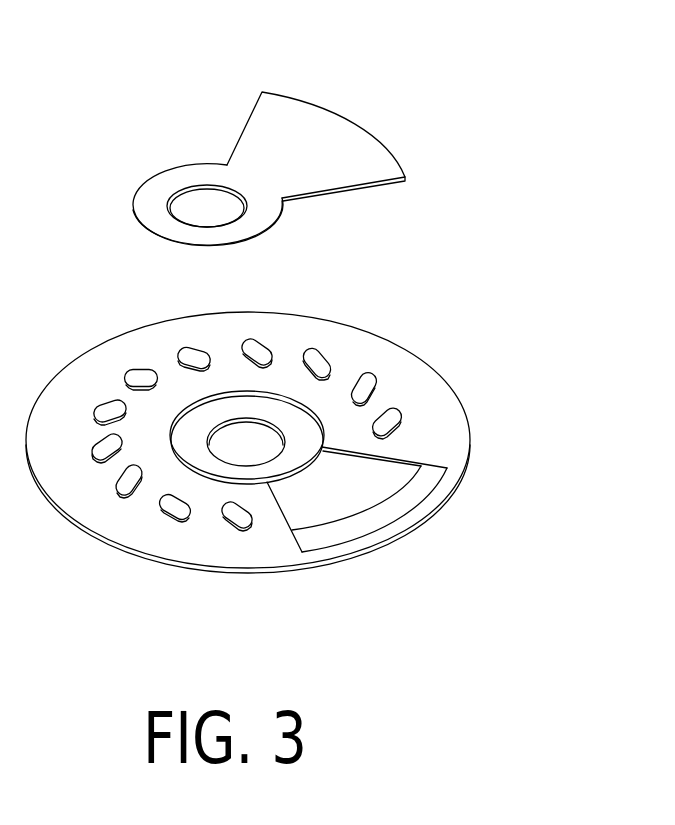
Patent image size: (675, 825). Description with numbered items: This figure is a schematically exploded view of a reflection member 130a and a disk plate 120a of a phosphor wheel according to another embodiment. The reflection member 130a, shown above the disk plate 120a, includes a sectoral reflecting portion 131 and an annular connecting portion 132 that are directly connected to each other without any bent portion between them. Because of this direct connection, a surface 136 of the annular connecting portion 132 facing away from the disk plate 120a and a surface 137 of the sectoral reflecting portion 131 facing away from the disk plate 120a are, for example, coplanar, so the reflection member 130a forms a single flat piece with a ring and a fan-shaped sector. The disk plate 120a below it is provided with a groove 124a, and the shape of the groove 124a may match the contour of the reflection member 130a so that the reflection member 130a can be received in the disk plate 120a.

The disk plate 120a is at (308, 491).
The groove 124a is at (376, 519).
The reflection member 130a is at (347, 155).
The sectoral reflecting portion 131 is at (337, 170).
The annular connecting portion 132 is at (253, 222).
The surface of the annular connecting portion 136 is at (293, 174).
The surface of the sectoral reflecting portion 137 is at (356, 136).